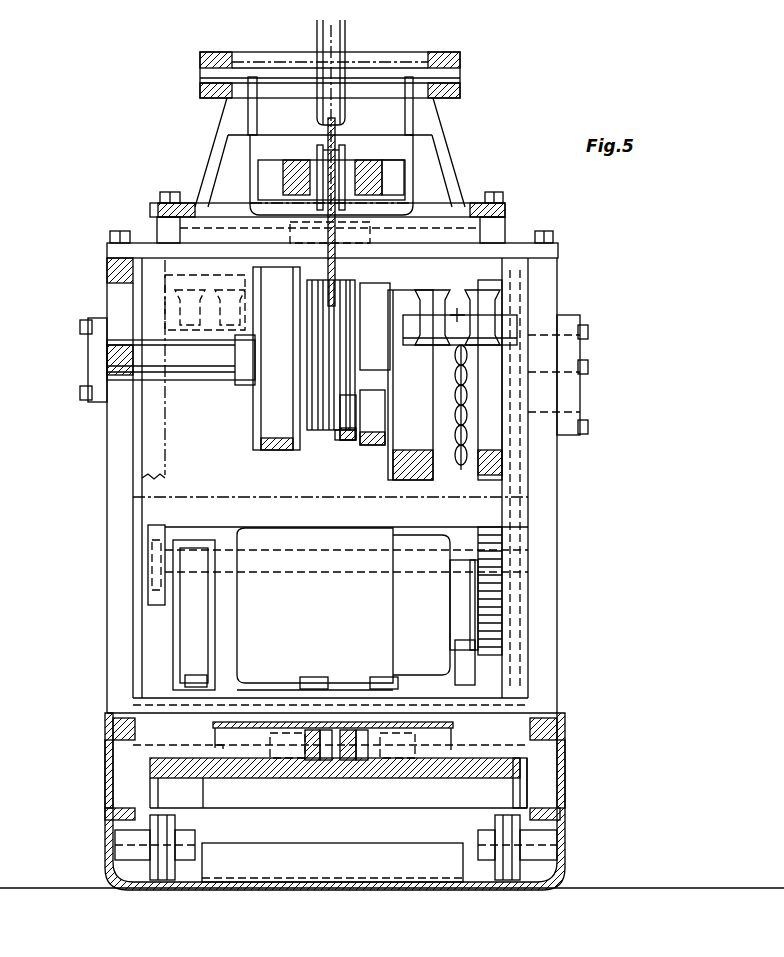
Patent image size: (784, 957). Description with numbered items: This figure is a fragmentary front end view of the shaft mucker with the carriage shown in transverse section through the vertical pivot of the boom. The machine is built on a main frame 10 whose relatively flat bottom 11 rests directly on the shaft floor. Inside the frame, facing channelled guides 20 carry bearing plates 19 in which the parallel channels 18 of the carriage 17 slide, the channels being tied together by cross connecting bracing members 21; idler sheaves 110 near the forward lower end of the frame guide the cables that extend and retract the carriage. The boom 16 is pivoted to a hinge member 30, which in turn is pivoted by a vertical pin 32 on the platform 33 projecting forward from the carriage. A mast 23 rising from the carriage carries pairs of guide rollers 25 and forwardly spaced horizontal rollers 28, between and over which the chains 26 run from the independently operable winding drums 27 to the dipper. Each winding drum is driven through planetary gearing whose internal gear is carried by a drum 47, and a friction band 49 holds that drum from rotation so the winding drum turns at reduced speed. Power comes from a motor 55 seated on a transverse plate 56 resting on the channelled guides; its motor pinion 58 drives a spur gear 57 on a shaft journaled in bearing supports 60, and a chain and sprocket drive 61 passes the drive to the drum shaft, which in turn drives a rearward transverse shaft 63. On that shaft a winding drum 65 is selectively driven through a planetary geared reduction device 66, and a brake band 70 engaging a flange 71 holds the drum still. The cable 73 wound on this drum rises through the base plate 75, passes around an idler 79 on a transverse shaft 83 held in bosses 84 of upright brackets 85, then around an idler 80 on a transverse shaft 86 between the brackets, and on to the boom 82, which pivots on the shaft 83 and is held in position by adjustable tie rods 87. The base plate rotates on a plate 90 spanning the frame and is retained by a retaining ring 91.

The main frame 10 is at (106, 599).
The bottom 11 is at (284, 885).
The boom 16 is at (223, 748).
The carriage 17 is at (276, 808).
The channels 18 is at (130, 743).
The bearing plates 19 is at (105, 814).
The channelled guides 20 is at (105, 773).
The cross connecting bracing members 21 is at (486, 738).
The mast 23 is at (515, 633).
The guide rollers 25 is at (470, 290).
The chains 26 is at (460, 308).
The winding drums 27 is at (490, 455).
The horizontal rollers 28 is at (510, 318).
The hinge member 30 is at (375, 760).
The vertical pin 32 is at (332, 760).
The platform 33 is at (484, 780).
The drum 47 is at (398, 468).
The friction band 49 is at (434, 488).
The motor 55 is at (262, 672).
The transverse plate 56 is at (483, 697).
The spur gear 57 is at (496, 545).
The motor pinion 58 is at (490, 602).
The bearing supports 60 is at (178, 640).
The chain and sprocket drive 61 is at (155, 600).
The transverse shaft 63 is at (155, 370).
The winding drum 65 is at (312, 445).
The planetary geared reduction device 66 is at (253, 439).
The brake band 70 is at (372, 444).
The flange 71 is at (343, 442).
The cable 73 is at (336, 133).
The base plate 75 is at (198, 210).
The idler 79 is at (317, 146).
The idler 80 is at (320, 32).
The boom 82 is at (304, 145).
The transverse shaft 83 is at (390, 168).
The bosses 84 is at (268, 159).
The upright brackets 85 is at (228, 116).
The transverse shaft 86 is at (210, 70).
The adjustable tie rods 87 is at (216, 54).
The plate 90 is at (502, 212).
The retaining ring 91 is at (158, 208).
The idler sheaves 110 is at (153, 890).